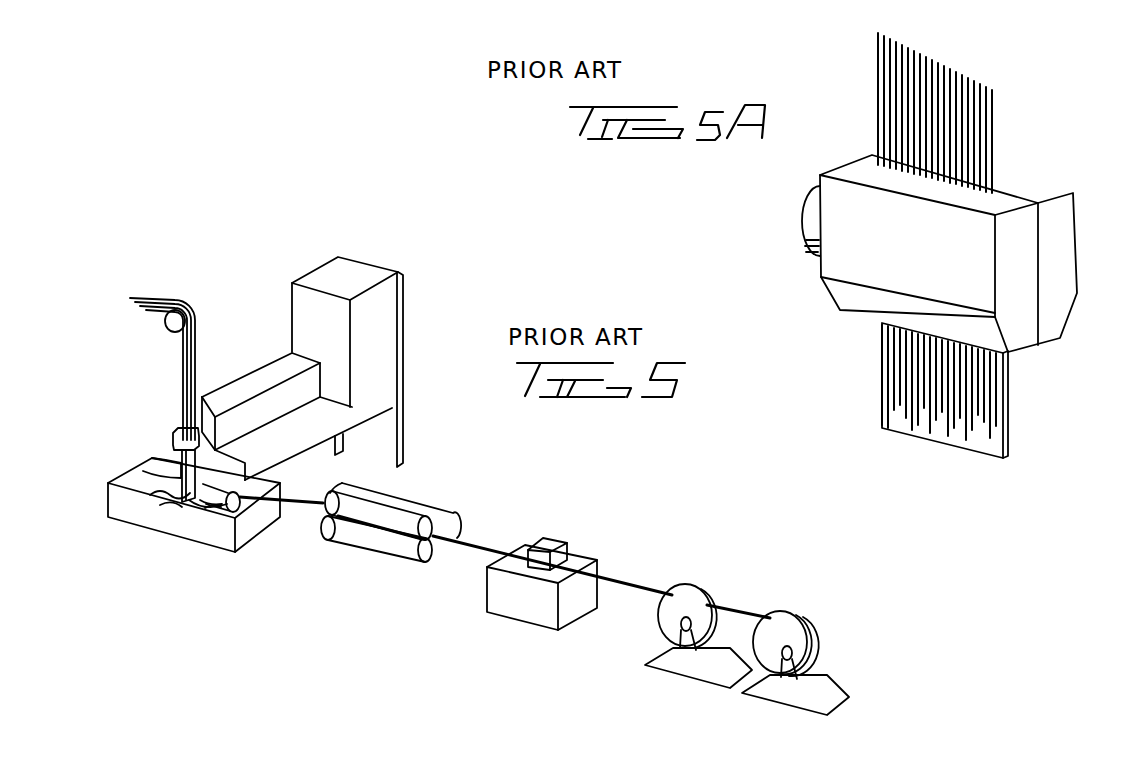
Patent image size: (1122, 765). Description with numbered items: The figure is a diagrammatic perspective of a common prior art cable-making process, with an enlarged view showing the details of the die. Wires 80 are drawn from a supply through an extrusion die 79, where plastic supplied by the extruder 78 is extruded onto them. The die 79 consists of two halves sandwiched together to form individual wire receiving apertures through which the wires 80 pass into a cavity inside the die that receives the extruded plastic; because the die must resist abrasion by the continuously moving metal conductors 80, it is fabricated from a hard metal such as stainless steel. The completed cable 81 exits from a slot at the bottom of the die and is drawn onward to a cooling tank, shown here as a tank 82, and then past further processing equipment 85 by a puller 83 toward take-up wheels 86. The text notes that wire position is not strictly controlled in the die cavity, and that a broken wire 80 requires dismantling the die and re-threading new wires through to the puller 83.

In FIG. 5, the extruder 78 is at (275, 383).
In FIG. 5, the extrusion die 79 is at (173, 442).
In FIG. 5A, the extrusion die 79 is at (840, 193).
In FIG. 5, the wires 80 is at (183, 373).
In FIG. 5A, the wires 80 is at (890, 107).
In FIG. 5, the completed cable 81 is at (150, 462).
In FIG. 5A, the completed cable 81 is at (905, 378).
In FIG. 5, the resin bath 82 is at (206, 532).
In FIG. 5, the puller 83 is at (462, 503).
In FIG. 5, the cutter / guide box 85 is at (557, 547).
In FIG. 5, the take-up wheels 86 is at (803, 615).